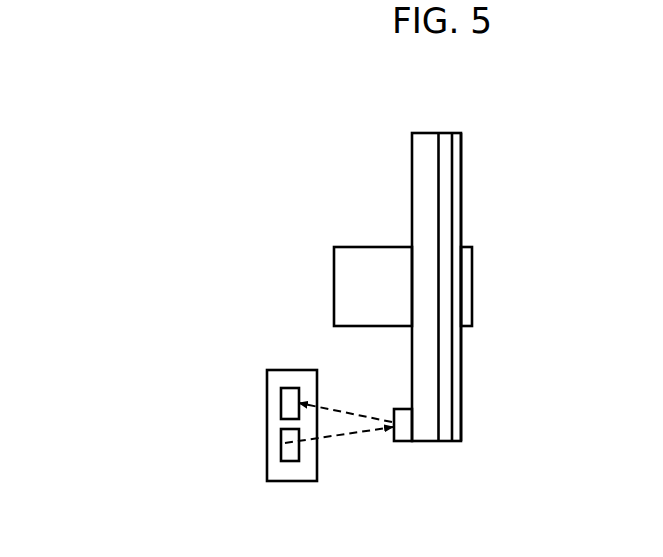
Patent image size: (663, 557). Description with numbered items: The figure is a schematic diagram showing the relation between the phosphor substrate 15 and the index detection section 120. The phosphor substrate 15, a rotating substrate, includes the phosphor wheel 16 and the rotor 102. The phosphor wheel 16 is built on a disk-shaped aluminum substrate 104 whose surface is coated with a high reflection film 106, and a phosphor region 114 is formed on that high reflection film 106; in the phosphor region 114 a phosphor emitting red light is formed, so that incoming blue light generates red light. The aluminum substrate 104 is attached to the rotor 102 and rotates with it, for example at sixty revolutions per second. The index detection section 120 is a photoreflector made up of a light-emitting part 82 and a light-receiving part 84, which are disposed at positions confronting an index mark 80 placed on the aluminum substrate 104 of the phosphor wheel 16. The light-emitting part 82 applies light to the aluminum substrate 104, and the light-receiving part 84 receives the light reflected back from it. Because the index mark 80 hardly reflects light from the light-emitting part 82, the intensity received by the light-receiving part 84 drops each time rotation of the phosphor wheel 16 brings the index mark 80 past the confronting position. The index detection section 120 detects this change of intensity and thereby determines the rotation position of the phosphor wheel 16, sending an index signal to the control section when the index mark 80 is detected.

The phosphor substrate 15 is at (538, 143).
The phosphor wheel 16 is at (461, 123).
The rotor 102 is at (368, 268).
The aluminum substrate 104 is at (422, 399).
The high reflection film 106 is at (443, 400).
The phosphor region 114 is at (456, 400).
The index mark 80 is at (398, 428).
The light-emitting part 82 is at (296, 443).
The light-receiving part 84 is at (290, 403).
The index detection section 120 is at (168, 455).